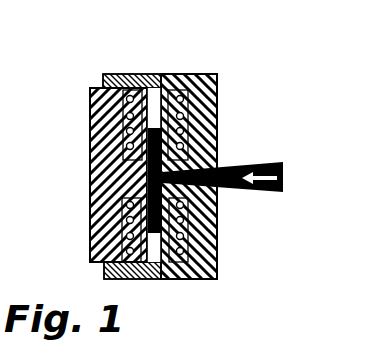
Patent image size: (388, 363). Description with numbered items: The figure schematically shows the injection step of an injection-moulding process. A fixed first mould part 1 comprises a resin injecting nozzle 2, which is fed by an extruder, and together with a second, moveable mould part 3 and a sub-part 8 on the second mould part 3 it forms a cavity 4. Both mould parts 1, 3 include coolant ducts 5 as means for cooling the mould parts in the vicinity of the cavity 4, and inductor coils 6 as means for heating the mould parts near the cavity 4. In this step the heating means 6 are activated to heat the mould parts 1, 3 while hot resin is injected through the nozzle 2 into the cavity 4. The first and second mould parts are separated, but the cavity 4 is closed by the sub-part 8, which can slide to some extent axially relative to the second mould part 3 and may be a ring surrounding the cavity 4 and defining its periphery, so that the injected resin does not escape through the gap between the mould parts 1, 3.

The first mould part 1 is at (212, 74).
The resin injecting nozzle 2 is at (216, 168).
The second mould part 3 is at (91, 100).
The cavity 4 is at (161, 86).
The coolant ducts 5 is at (128, 250).
The inductor coils 6 is at (184, 130).
The sub-part 8 is at (138, 76).